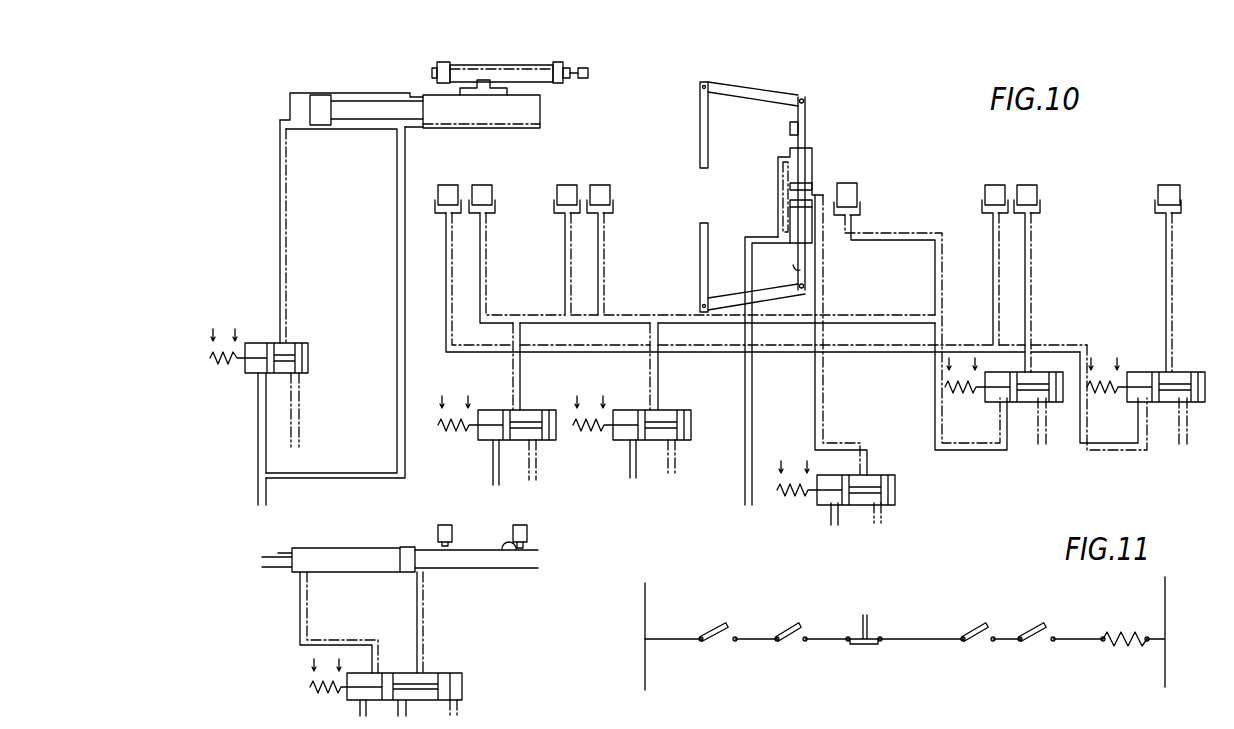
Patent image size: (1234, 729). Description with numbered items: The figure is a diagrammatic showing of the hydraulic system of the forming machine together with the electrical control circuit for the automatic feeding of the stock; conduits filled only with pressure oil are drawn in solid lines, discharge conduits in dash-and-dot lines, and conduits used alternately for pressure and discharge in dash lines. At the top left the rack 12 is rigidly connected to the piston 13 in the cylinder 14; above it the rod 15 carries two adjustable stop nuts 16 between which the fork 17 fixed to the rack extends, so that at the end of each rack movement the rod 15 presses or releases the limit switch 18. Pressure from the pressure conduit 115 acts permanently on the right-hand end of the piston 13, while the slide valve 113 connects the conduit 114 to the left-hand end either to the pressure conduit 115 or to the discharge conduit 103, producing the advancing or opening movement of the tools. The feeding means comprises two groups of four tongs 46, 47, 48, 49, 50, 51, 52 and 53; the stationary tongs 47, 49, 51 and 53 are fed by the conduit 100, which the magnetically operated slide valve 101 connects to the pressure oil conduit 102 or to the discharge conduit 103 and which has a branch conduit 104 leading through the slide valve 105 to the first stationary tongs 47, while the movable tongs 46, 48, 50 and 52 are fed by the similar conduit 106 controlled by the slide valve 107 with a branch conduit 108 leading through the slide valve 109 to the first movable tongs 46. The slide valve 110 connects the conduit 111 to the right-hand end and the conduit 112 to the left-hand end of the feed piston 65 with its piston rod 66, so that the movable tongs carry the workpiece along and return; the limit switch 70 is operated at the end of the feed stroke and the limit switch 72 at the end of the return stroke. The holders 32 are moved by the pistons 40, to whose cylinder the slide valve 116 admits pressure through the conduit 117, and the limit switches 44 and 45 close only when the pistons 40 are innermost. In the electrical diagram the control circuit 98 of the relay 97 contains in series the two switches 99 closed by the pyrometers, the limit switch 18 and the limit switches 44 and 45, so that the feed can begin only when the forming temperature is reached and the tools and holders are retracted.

In FIG. 10, the rack 12 is at (541, 110).
In FIG. 10, the piston 13 is at (320, 112).
In FIG. 10, the cylinder 14 is at (372, 93).
In FIG. 10, the rod 15 is at (515, 65).
In FIG. 10, the nuts 16 is at (447, 62).
In FIG. 10, the fork 17 is at (483, 97).
In FIG. 10, the limit switch 18 is at (588, 70).
In FIG. 11, the limit switch 18 is at (868, 622).
In FIG. 10, the holders 32 is at (704, 140).
In FIG. 10, the pistons 40 is at (795, 205).
In FIG. 10, the limit switch 44 is at (790, 128).
In FIG. 11, the limit switch 44 is at (725, 624).
In FIG. 10, the limit switch 45 is at (795, 262).
In FIG. 11, the limit switch 45 is at (792, 624).
In FIG. 10, the tongs 46 is at (1170, 190).
In FIG. 10, the tongs 47 is at (1028, 190).
In FIG. 10, the tongs 48 is at (996, 190).
In FIG. 10, the tongs 49 is at (850, 190).
In FIG. 10, the tongs 50 is at (447, 187).
In FIG. 10, the tongs 51 is at (485, 192).
In FIG. 10, the tongs 52 is at (568, 187).
In FIG. 10, the tongs 53 is at (603, 190).
In FIG. 10, the piston 65 is at (408, 548).
In FIG. 10, the piston rod 66 is at (268, 560).
In FIG. 10, the limit switch 70 is at (454, 530).
In FIG. 10, the limit switch 72 is at (528, 530).
In FIG. 11, the relay 97 is at (1125, 628).
In FIG. 11, the control circuit 98 is at (676, 638).
In FIG. 11, the switches 99 is at (1040, 622).
In FIG. 10, the conduit 100 is at (640, 315).
In FIG. 10, the magnetically operated slide valve 101 is at (490, 415).
In FIG. 10, the pressure oil conduit 102 is at (494, 462).
In FIG. 10, the discharge conduit 103 is at (297, 398).
In FIG. 10, the branch conduit 104 is at (937, 405).
In FIG. 10, the magnetically operated slide valve 105 is at (990, 385).
In FIG. 10, the conduit 106 is at (873, 353).
In FIG. 10, the magnetically operated slide valve 107 is at (625, 415).
In FIG. 10, the branch conduit 108 is at (1116, 455).
In FIG. 10, the slide valve 109 is at (1137, 374).
In FIG. 10, the magnetically operated slide valve 110 is at (357, 707).
In FIG. 10, the conduit 111 is at (424, 628).
In FIG. 10, the conduit 112 is at (306, 615).
In FIG. 10, the magnetically operated slide valve 113 is at (258, 345).
In FIG. 10, the conduit 114 is at (284, 210).
In FIG. 10, the pressure conduit 115 is at (398, 296).
In FIG. 10, the magnetically operated slide valve 116 is at (820, 500).
In FIG. 10, the conduit 117 is at (818, 410).